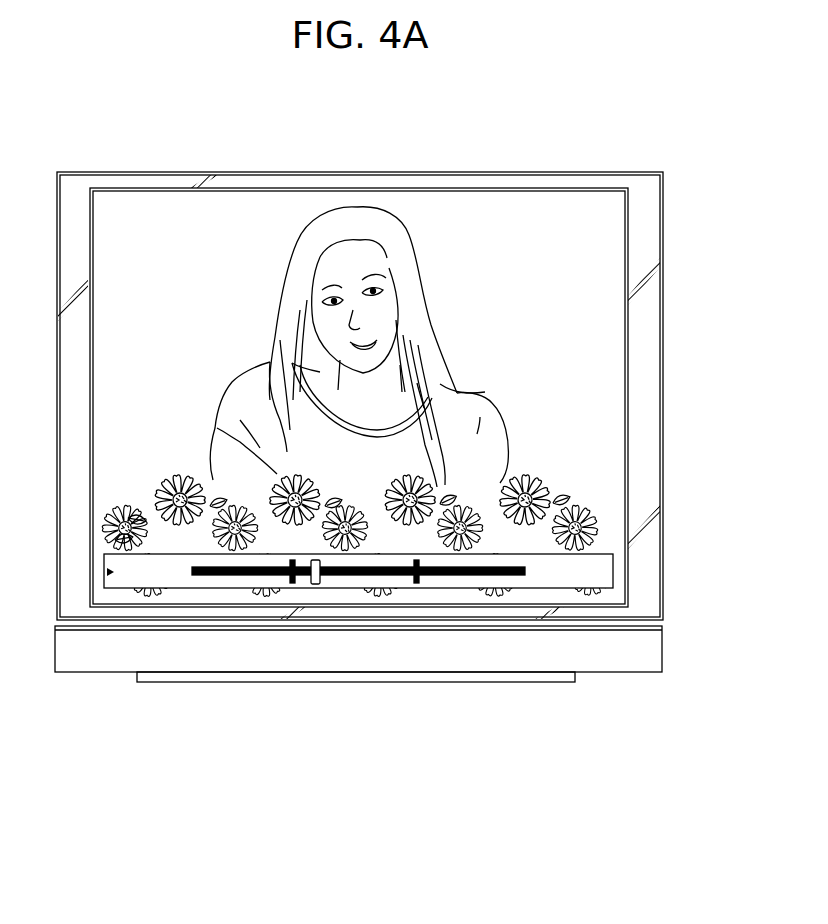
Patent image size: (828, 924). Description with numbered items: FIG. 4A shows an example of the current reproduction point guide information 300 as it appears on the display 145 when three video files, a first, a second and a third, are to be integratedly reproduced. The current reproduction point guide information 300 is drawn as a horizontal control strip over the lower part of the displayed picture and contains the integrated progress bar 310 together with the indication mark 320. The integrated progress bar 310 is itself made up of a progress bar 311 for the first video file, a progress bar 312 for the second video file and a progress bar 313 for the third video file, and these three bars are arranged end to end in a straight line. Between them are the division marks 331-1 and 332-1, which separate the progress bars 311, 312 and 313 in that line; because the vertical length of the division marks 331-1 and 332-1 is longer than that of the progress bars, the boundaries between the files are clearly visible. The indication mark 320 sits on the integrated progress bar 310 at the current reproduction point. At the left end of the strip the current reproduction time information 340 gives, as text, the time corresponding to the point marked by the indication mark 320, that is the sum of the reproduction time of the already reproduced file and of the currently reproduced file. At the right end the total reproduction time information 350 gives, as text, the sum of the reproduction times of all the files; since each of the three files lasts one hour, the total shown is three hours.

The display 145 is at (369, 185).
The current reproduction point guide information 300 is at (613, 553).
The integrated progress bar 310 is at (212, 746).
The progress bar for the first video file 311 is at (225, 580).
The progress bar for the second video file 312 is at (345, 578).
The progress bar for the third video file 313 is at (462, 578).
The indication mark 320 is at (315, 586).
The division mark 331-1 is at (290, 586).
The division mark 332-1 is at (416, 586).
The current reproduction time information 340 is at (150, 588).
The total reproduction time information 350 is at (575, 583).